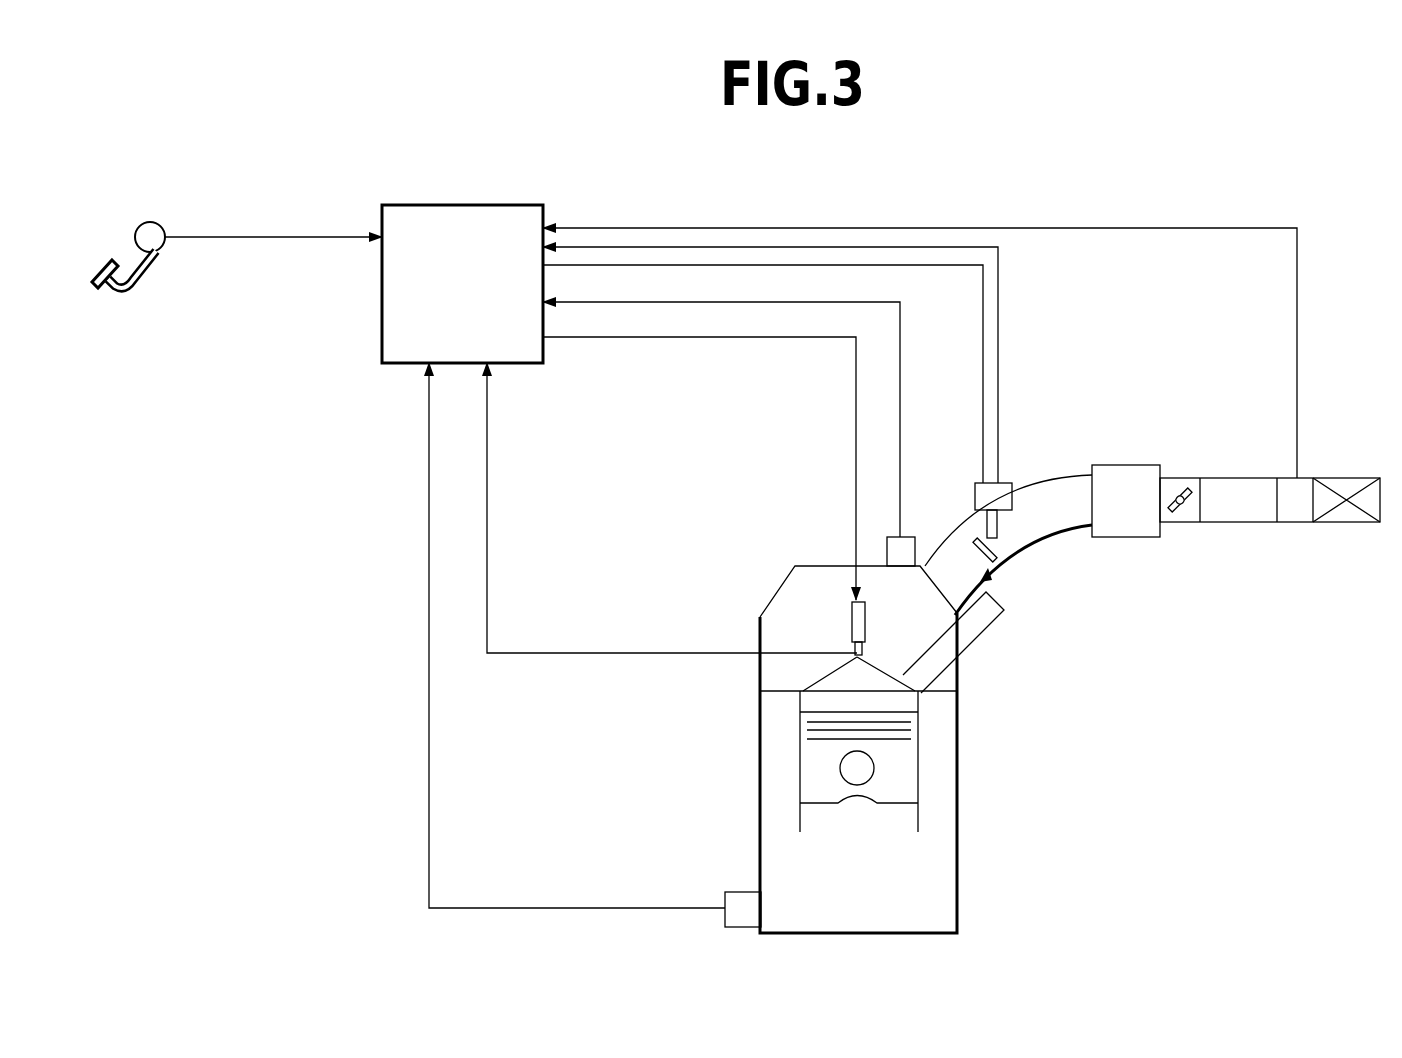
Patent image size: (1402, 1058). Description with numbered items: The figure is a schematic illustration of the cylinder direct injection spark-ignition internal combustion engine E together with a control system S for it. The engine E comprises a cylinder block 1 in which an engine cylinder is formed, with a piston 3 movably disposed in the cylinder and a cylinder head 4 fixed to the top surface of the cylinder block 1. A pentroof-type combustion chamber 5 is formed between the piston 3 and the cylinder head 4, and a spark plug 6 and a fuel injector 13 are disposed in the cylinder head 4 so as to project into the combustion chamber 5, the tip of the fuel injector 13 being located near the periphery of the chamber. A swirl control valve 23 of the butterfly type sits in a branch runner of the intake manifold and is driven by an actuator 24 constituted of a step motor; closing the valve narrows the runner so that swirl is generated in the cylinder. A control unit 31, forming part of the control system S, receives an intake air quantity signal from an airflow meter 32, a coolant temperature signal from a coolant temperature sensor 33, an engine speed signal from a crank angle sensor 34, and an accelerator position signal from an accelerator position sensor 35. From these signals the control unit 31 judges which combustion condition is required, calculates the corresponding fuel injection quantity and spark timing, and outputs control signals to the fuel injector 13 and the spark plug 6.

The cylinder block 1 is at (940, 750).
The piston 3 is at (810, 767).
The cylinder head 4 is at (773, 672).
The combustion chamber 5 is at (900, 700).
The spark plug 6 is at (850, 615).
The fuel injector 13 is at (970, 632).
The swirl control valve 23 is at (1003, 567).
The actuator 24 is at (1010, 483).
The control unit 31 is at (477, 205).
The airflow meter 32 is at (1297, 513).
The coolant temperature sensor 33 is at (905, 537).
The crank angle sensor 34 is at (745, 905).
The accelerator position sensor 35 is at (162, 223).
The control system S is at (373, 478).
The engine E is at (1128, 690).